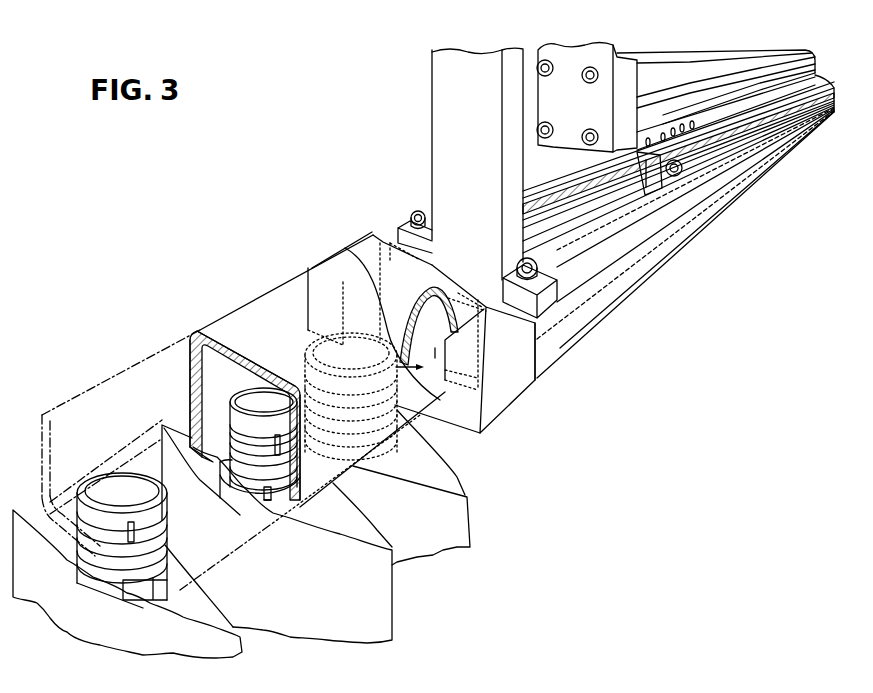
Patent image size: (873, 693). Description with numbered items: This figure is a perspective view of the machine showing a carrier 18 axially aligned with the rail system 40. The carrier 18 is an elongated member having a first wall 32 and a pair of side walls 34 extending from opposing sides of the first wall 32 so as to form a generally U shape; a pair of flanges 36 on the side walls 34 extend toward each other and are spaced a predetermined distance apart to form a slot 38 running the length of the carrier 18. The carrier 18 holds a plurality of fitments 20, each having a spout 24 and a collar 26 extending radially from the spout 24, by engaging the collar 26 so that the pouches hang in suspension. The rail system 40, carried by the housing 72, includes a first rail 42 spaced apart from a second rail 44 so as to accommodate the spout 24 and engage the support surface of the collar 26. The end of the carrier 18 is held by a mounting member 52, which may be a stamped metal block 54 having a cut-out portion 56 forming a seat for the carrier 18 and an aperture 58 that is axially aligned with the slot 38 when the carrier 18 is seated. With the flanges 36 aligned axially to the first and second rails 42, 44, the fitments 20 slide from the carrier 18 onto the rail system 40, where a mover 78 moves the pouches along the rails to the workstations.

The carrier 18 is at (265, 286).
The fitment 20 is at (262, 398).
The spout 24 is at (217, 410).
The collar 26 is at (222, 433).
The first wall 32 is at (246, 357).
The side walls 34 is at (266, 420).
The flanges 36 is at (266, 512).
The slot 38 is at (345, 248).
The rail system 40 is at (650, 315).
The first rail 42 is at (683, 237).
The second rail 44 is at (565, 192).
The mounting member 52 is at (519, 410).
The block 54 is at (520, 370).
The portion 56 is at (427, 398).
The aperture 58 is at (433, 353).
The housing 72 is at (551, 42).
The mover 78 is at (680, 180).